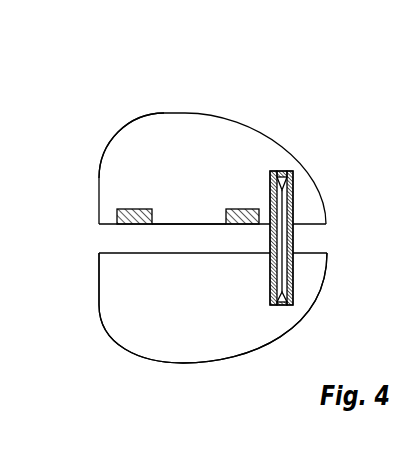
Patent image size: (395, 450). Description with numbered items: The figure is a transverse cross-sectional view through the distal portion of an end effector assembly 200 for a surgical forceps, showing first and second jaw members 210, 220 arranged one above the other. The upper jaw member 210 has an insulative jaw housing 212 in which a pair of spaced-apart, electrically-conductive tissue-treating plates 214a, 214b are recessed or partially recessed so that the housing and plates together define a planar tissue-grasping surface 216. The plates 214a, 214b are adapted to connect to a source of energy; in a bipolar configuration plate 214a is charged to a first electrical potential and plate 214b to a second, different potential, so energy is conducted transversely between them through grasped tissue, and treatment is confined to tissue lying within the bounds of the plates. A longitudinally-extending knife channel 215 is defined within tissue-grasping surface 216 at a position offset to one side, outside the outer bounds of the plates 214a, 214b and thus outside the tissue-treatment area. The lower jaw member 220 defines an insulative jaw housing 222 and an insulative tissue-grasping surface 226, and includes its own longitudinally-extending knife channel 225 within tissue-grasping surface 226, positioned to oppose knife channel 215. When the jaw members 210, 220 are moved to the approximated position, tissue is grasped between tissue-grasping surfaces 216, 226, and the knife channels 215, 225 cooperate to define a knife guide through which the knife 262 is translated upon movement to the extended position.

The end effector assembly 200 is at (247, 79).
The first jaw member 210 is at (260, 119).
The insulative jaw housing 212 is at (143, 117).
The first tissue-treating plate 214a is at (132, 209).
The second tissue-treating plate 214b is at (243, 209).
The knife channel 215 is at (293, 192).
The tissue-grasping surface 216 is at (162, 228).
The second jaw member 220 is at (141, 360).
The insulative jaw housing 222 is at (117, 290).
The knife channel 225 is at (292, 282).
The insulative tissue-grasping surface 226 is at (107, 252).
The knife 262 is at (283, 243).